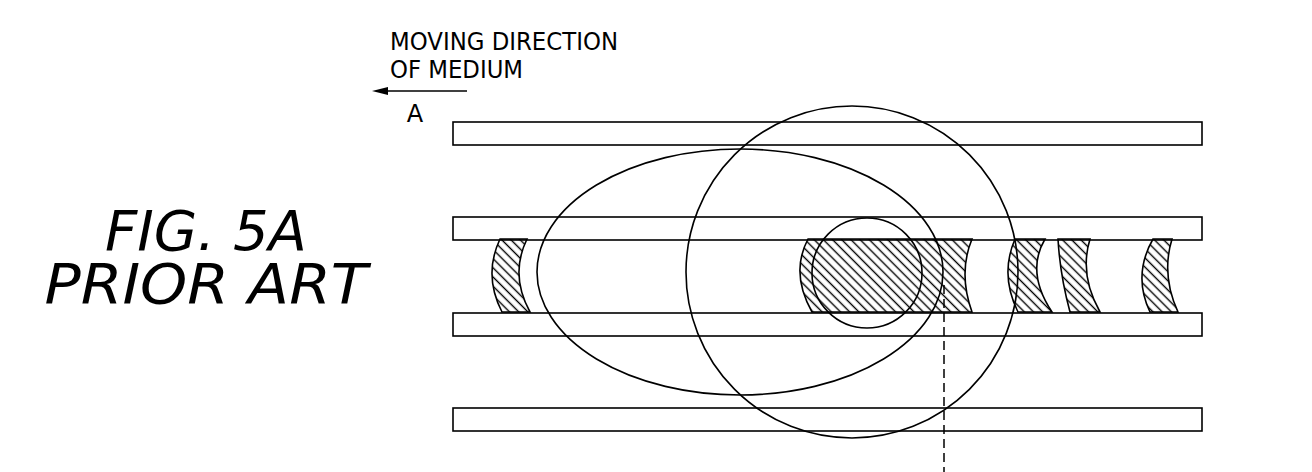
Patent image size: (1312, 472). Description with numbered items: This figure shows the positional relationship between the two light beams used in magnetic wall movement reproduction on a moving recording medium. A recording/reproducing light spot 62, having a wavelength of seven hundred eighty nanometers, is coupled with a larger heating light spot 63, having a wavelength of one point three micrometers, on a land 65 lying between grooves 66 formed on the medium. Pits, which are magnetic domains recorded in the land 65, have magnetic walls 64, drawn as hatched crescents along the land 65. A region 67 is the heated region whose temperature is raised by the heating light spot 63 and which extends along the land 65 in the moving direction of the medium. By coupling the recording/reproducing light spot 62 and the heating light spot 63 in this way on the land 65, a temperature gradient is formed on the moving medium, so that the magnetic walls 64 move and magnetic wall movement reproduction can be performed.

The recording/reproducing light spot 62 is at (824, 218).
The heating light spot 63 is at (859, 105).
The magnetic walls 64 is at (1040, 261).
The land 65 is at (1190, 188).
The grooves 66 is at (1204, 130).
The heated region 67 is at (588, 356).